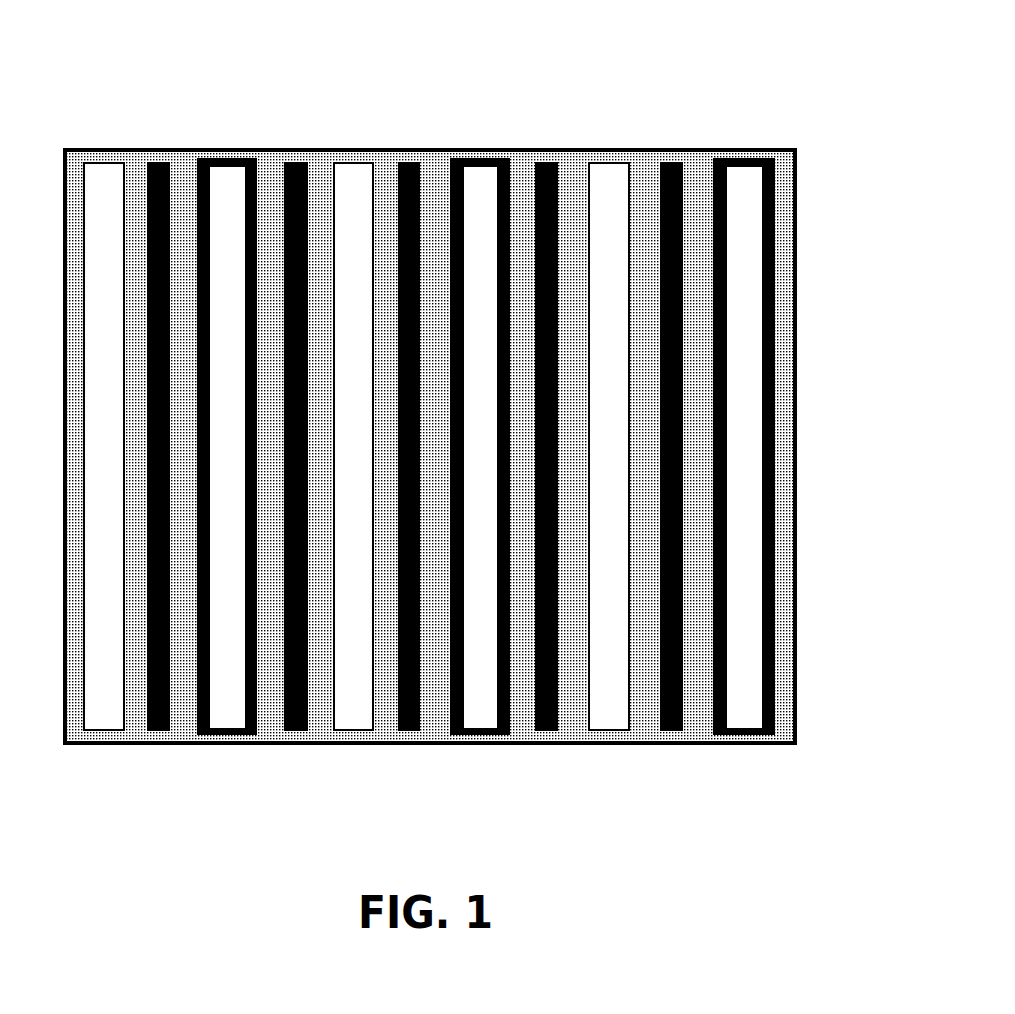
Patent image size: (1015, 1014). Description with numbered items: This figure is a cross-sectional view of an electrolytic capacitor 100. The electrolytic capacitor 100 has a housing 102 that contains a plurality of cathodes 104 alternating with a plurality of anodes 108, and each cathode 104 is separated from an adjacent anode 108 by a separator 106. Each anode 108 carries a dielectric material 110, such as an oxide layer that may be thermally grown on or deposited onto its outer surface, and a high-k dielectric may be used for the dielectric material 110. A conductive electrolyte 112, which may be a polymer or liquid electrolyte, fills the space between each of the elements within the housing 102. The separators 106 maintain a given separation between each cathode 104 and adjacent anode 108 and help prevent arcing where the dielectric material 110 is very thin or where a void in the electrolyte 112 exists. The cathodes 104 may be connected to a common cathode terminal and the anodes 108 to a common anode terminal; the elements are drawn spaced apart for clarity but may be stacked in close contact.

The electrolytic capacitor 100 is at (477, 41).
The housing 102 is at (797, 185).
The cathodes 104 is at (100, 733).
The separator 106 is at (163, 733).
The anodes 108 is at (227, 733).
The dielectric material 110 is at (190, 168).
The conductive electrolyte 112 is at (650, 168).